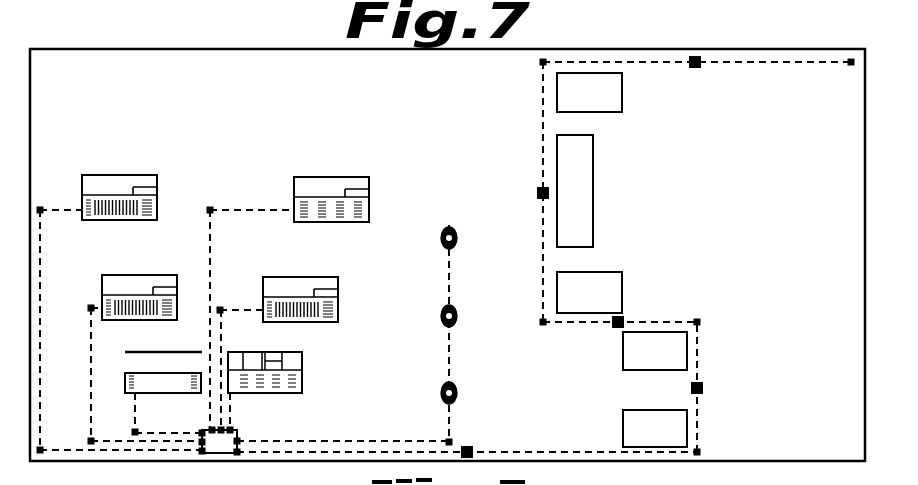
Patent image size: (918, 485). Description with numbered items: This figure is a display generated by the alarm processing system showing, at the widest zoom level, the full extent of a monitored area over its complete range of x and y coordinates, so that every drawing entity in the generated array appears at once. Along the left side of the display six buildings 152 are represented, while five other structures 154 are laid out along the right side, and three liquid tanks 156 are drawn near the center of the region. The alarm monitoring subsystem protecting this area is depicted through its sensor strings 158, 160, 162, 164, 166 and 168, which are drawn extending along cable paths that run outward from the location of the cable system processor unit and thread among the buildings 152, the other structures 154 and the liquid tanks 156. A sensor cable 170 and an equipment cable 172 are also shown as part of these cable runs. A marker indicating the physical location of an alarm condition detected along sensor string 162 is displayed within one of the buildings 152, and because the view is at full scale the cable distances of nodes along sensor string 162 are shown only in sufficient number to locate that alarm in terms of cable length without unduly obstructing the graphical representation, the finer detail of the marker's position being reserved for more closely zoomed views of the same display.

The buildings 152 is at (120, 175).
The other structures 154 is at (622, 92).
The liquid tanks 156 is at (449, 226).
The sensor string 158 is at (60, 207).
The sensor string 160 is at (89, 380).
The sensor string 162 is at (134, 413).
The sensor string 164 is at (211, 405).
The sensor string 166 is at (236, 302).
The sensor string 168 is at (230, 405).
The sensor cable 170 is at (331, 440).
The equipment cable 172 is at (537, 424).